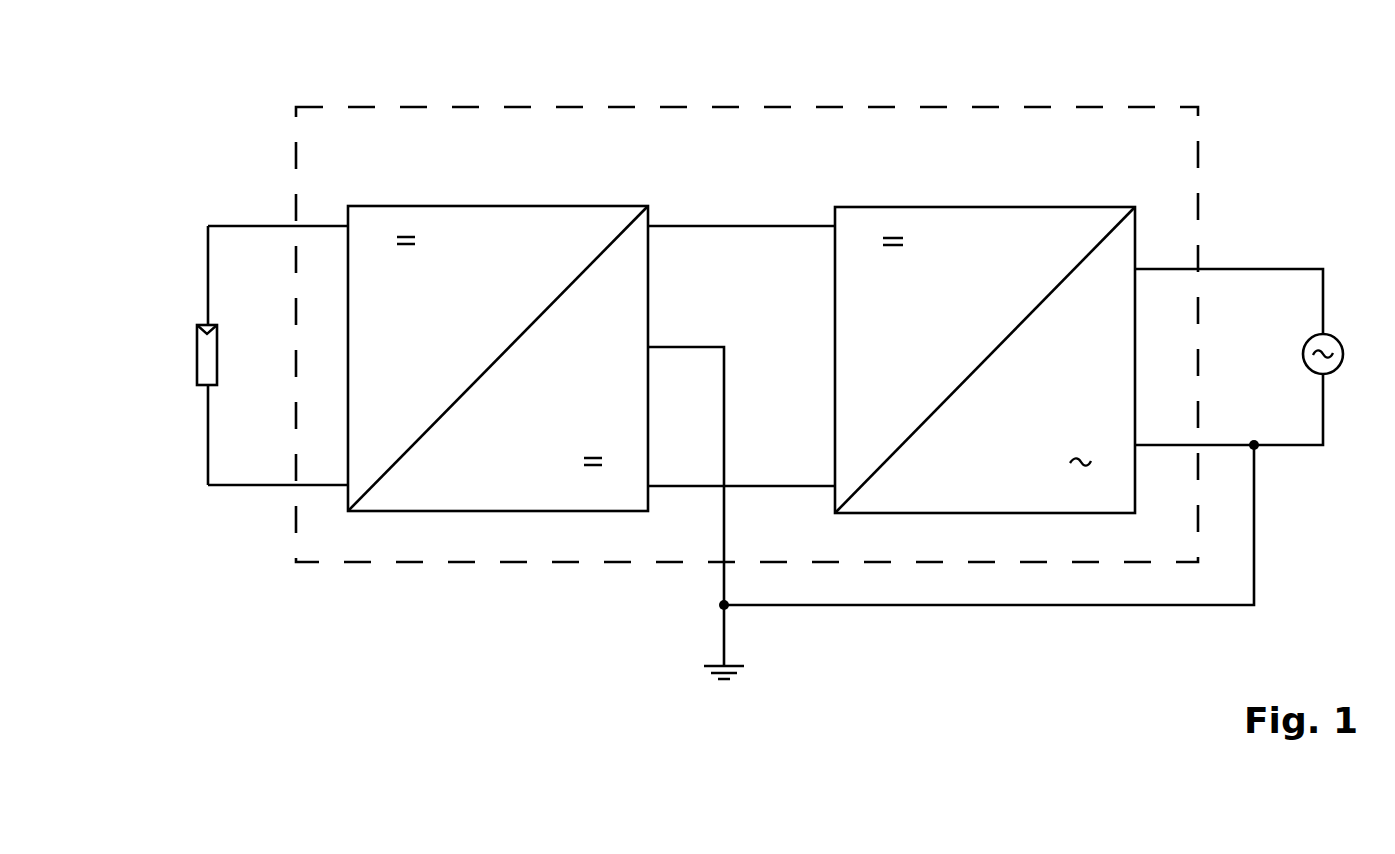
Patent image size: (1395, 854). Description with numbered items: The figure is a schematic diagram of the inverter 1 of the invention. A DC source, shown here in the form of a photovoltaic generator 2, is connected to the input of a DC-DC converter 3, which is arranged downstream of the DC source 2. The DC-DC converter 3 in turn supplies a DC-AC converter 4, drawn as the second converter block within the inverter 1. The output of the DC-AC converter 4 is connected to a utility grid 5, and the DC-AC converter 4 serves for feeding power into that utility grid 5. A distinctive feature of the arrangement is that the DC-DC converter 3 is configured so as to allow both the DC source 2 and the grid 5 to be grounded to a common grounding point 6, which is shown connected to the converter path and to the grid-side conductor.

The inverter 1 is at (780, 106).
The photovoltaic generator 2 is at (203, 353).
The DC-DC converter 3 is at (462, 205).
The DC-AC converter 4 is at (975, 206).
The utility grid 5 is at (1337, 346).
The grounding point 6 is at (722, 605).